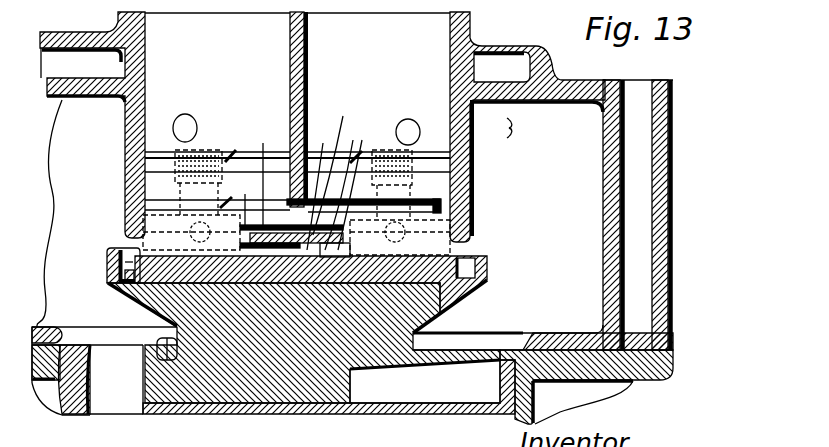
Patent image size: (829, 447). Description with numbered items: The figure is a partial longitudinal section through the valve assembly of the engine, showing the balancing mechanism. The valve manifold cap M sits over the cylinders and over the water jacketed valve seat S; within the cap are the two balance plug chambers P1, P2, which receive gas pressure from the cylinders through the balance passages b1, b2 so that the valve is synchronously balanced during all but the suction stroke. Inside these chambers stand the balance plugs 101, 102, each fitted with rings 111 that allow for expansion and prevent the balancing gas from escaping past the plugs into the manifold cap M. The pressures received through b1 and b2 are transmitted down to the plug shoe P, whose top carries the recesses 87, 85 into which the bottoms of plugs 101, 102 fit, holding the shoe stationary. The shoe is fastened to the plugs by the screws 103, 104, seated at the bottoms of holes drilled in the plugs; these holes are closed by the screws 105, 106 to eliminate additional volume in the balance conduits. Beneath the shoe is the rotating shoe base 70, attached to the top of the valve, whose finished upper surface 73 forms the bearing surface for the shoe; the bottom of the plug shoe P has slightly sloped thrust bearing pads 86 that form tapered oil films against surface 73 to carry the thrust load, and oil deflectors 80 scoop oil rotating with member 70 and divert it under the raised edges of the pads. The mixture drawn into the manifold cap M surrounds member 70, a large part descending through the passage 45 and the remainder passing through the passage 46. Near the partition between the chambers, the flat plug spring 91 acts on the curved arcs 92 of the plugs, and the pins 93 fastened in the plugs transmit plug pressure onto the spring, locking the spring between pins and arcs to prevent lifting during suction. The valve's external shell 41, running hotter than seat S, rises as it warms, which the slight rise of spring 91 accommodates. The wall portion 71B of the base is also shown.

The valve manifold cap M is at (62, 125).
The balance plug chamber P2 is at (217, 111).
The balance plug chamber P1 is at (379, 112).
The balance passage b2 is at (182, 114).
The balance passage b1 is at (412, 121).
The closing screw 106 is at (213, 147).
The closing screw 105 is at (380, 147).
The pin 93 is at (309, 184).
The curved part (arc) of plug 92 is at (288, 165).
The flat plug spring 91 is at (295, 189).
The rings 111 is at (160, 152).
The balance plug 102 is at (150, 173).
The balance plug 101 is at (440, 180).
The screw 103 is at (425, 228).
The screw 104 is at (125, 205).
The recess 87 is at (455, 250).
The plug shoe P is at (106, 264).
The clamp 71B is at (483, 273).
The recess 85 is at (133, 250).
The oil deflector 80 is at (108, 283).
The shoe base 70 is at (160, 306).
The upper surface of shoe base 73 is at (112, 293).
The valve seat S is at (62, 412).
The external shell of valve 41 is at (88, 413).
The passage 45 is at (134, 408).
The thrust bearing pad 86 is at (374, 361).
The passage (region) 46 is at (468, 367).